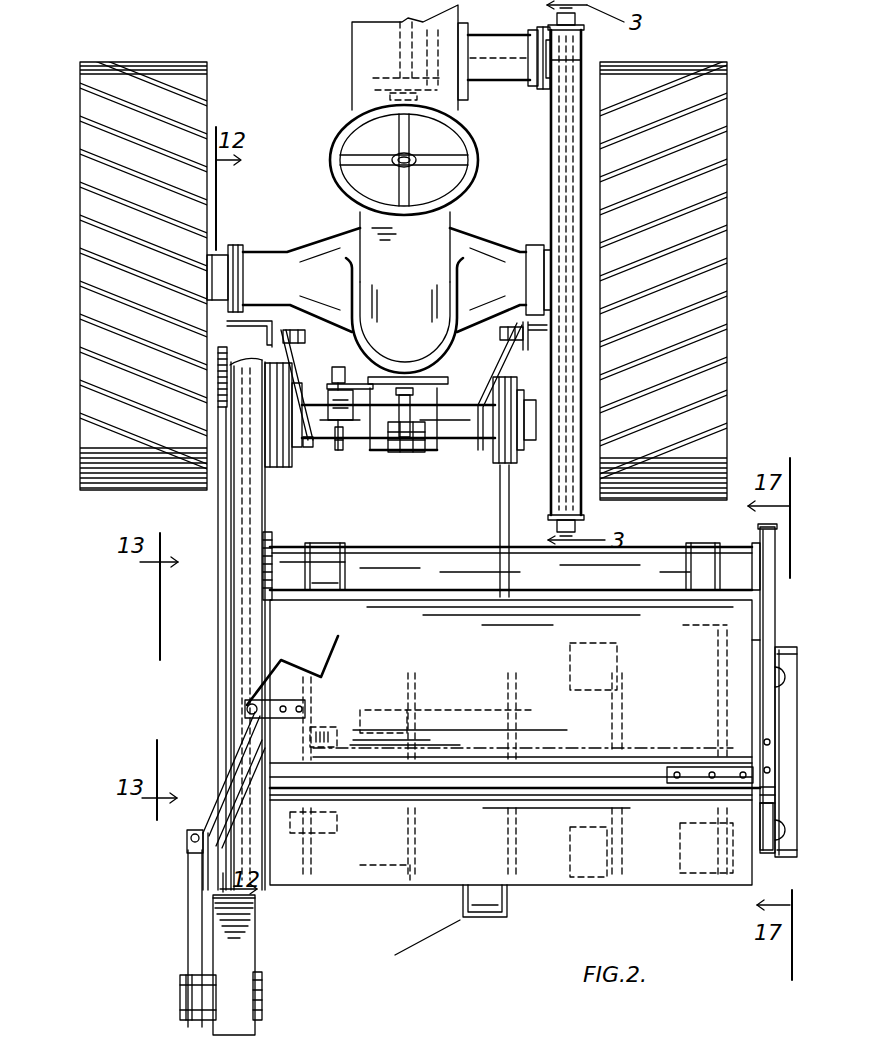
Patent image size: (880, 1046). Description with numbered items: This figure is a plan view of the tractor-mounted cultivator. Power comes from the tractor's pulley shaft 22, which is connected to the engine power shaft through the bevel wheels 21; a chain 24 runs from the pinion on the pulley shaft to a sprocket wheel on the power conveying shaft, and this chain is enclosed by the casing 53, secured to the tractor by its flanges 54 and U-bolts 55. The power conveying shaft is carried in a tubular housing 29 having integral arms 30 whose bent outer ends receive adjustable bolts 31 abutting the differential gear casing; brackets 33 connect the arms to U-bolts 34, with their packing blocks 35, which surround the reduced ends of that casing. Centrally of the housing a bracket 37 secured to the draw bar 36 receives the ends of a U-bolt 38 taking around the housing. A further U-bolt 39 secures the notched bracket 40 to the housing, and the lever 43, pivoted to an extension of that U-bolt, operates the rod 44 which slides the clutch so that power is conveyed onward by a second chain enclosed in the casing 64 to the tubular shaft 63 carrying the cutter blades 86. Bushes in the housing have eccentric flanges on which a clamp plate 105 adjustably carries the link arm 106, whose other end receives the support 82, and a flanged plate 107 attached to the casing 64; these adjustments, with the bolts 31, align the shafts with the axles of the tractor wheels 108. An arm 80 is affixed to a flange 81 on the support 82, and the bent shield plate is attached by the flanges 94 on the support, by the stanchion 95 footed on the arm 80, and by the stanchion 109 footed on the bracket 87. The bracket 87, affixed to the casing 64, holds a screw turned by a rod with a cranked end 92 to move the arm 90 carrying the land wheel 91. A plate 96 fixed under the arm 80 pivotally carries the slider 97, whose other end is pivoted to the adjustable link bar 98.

The bevel wheels 21 is at (382, 80).
The pulley shaft 22 is at (493, 80).
The chain 24 is at (570, 65).
The tubular housing 29 is at (530, 470).
The arms 30 is at (227, 363).
The adjustable bolts 31 is at (295, 338).
The brackets 33 is at (270, 315).
The U-bolts 34 is at (237, 250).
The packing blocks 35 is at (244, 318).
The draw bar 36 is at (392, 450).
The bracket 37 is at (420, 450).
The U-bolt 38 is at (405, 395).
The U-bolt 39 is at (338, 442).
The bracket 40 is at (328, 418).
The lever 43 is at (355, 380).
The rod 44 is at (467, 373).
The casing 53 is at (556, 196).
The flanges 54 is at (522, 85).
The U-bolts 55 is at (540, 90).
The tubular shaft 63 is at (420, 750).
The casing 64 is at (260, 633).
The arm 80 is at (763, 642).
The flange 81 is at (758, 548).
The support 82 is at (422, 562).
The cutter blades 86 is at (570, 673).
The bracket 87 is at (187, 840).
The arm 90 is at (192, 903).
The land wheel 91 is at (230, 950).
The cranked end 92 is at (333, 657).
The flanges 94 is at (322, 562).
The stanchion 95 is at (690, 768).
The plate 96 is at (767, 853).
The slider 97 is at (787, 708).
The adjustable link bar 98 is at (773, 838).
The clamp plate 105 is at (495, 463).
The link arm 106 is at (500, 532).
The flanged plate 107 is at (267, 472).
The wheels 108 is at (127, 177).
The stanchion 109 is at (252, 757).